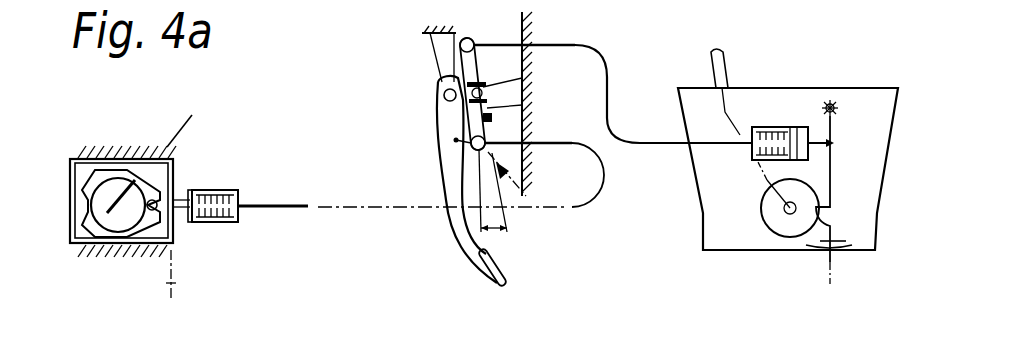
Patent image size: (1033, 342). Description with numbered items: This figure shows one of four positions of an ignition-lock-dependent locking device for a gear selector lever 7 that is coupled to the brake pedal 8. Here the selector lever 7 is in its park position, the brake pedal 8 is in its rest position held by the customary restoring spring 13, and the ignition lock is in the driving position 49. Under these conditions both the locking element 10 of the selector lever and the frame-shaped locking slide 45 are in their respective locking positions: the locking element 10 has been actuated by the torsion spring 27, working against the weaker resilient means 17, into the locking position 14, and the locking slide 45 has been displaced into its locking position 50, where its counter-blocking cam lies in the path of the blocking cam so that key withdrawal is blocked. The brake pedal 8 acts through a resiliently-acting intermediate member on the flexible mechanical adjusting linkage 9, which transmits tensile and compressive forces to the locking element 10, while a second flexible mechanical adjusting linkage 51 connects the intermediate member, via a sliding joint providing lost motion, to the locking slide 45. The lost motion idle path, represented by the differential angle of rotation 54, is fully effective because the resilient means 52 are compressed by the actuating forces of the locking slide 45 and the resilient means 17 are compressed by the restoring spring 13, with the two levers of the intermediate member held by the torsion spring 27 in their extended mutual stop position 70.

The gear selector lever 7 is at (737, 52).
The brake pedal 8 is at (447, 243).
The adjusting linkage 9 is at (618, 82).
The locking element 10 is at (842, 128).
The restoring spring 13 is at (480, 168).
The locking position 14 is at (842, 272).
The resilient means 17 is at (778, 132).
The torsion spring 27 is at (454, 82).
The locking slide 45 is at (72, 220).
The driving position 49 is at (170, 129).
The locking position 50 is at (180, 282).
The adjusting linkage 51 is at (371, 198).
The resilient means 52 is at (220, 188).
The differential angle of rotation 54 is at (497, 230).
The extended mutual stop position 70 is at (503, 217).